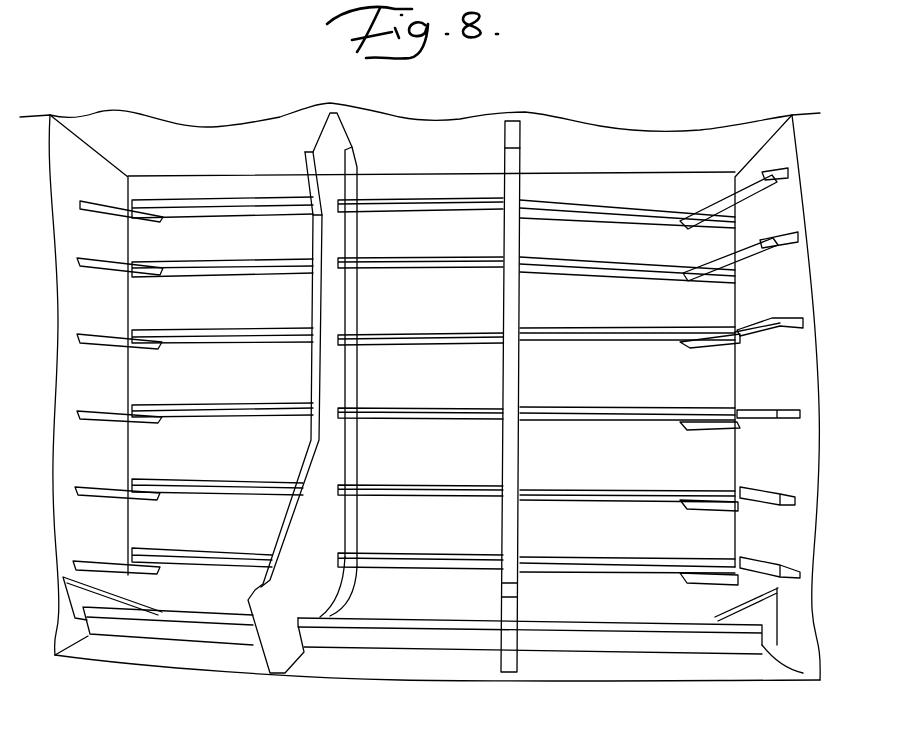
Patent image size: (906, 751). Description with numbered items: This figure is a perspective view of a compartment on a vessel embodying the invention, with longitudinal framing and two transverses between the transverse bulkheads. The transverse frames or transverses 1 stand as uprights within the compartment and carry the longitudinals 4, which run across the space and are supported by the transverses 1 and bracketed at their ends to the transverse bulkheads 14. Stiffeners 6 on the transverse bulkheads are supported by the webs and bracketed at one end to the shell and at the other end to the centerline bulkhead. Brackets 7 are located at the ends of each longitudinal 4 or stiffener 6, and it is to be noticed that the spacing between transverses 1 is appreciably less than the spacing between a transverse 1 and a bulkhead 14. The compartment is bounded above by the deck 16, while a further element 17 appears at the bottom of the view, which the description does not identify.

The transverse frame 1 is at (305, 298).
The longitudinal 4 is at (433, 217).
The stiffener on transverse bulkhead 6 is at (782, 200).
The bracket 7 is at (97, 223).
The bulkhead 14 is at (63, 312).
The deck 16 is at (593, 125).
The floor 17 is at (613, 681).